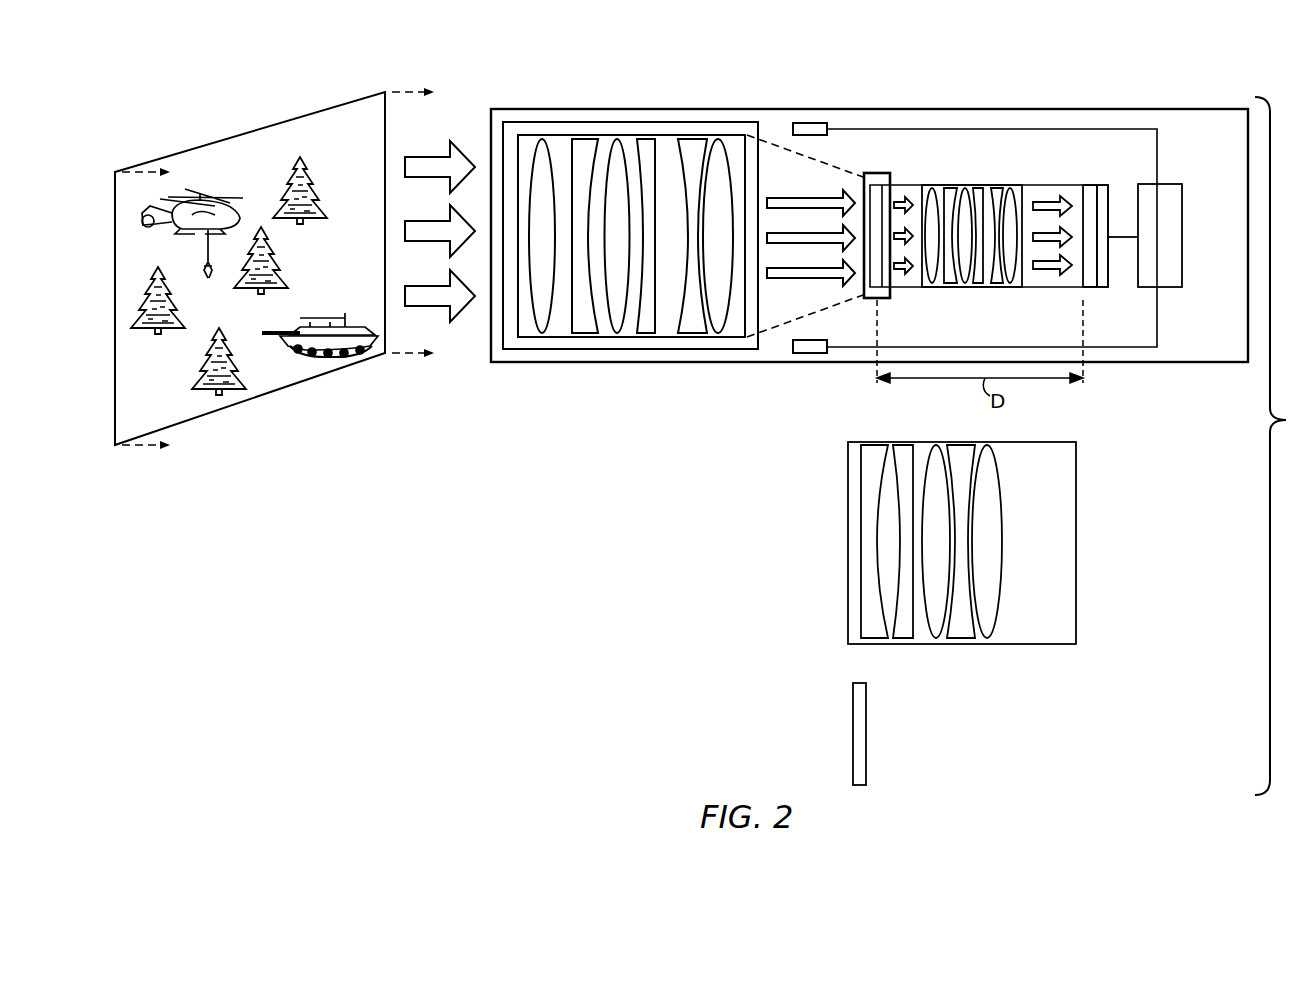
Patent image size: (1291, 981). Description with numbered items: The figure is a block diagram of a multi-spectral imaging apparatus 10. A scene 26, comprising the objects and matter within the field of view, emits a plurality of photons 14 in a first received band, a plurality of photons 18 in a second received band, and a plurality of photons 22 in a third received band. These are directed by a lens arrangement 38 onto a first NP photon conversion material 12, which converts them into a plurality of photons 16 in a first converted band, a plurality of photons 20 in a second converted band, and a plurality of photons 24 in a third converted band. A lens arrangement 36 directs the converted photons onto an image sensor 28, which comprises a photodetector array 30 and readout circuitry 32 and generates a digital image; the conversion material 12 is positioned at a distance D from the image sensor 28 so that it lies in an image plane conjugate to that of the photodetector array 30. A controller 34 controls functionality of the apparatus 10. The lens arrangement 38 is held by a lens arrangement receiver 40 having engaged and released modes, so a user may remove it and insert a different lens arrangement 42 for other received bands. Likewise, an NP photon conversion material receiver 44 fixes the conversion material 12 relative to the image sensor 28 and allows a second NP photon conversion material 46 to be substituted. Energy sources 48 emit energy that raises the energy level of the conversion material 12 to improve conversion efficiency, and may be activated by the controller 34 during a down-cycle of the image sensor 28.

The multi-spectral imaging apparatus 10 is at (975, 70).
The first NP photon conversion material 12 is at (870, 205).
The plurality of photons in a first received band 14 is at (437, 156).
The plurality of photons in a first converted band 16 is at (900, 197).
The plurality of photons in a second received band 18 is at (437, 219).
The plurality of photons in a second converted band 20 is at (905, 240).
The plurality of photons in a third received band 22 is at (437, 284).
The plurality of photons in a third converted band 24 is at (900, 273).
The scene 26 is at (208, 144).
The image sensor 28 is at (1108, 294).
The photodetector array 30 is at (1089, 185).
The readout circuitry 32 is at (1104, 185).
The controller 34 is at (1182, 269).
The lens arrangement 36 is at (1022, 177).
The lens arrangement 38 is at (530, 337).
The lens arrangement receiver 40 is at (665, 122).
The different lens arrangement 42 is at (1076, 468).
The NP photon conversion material receiver 44 is at (866, 300).
The second NP photon conversion material 46 is at (866, 703).
The energy sources 48 is at (815, 123).